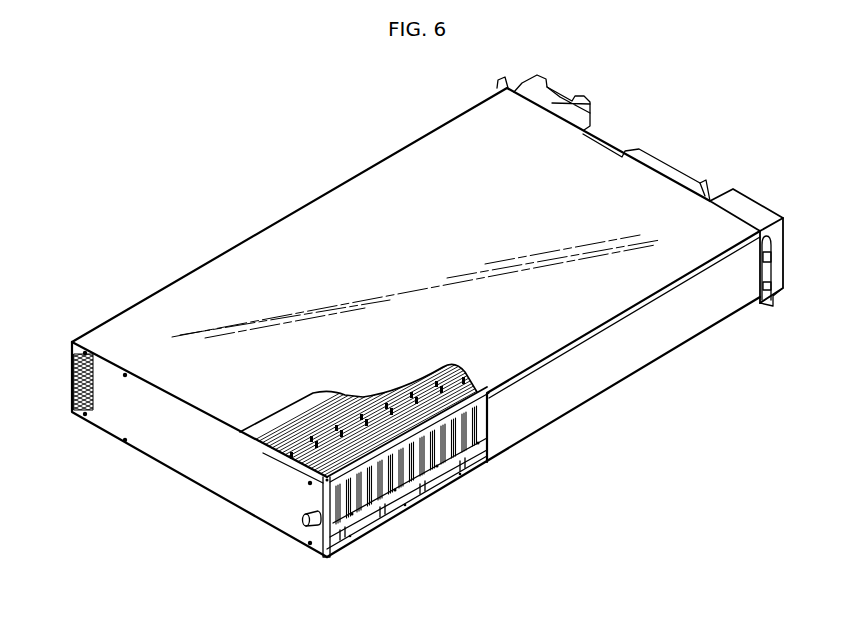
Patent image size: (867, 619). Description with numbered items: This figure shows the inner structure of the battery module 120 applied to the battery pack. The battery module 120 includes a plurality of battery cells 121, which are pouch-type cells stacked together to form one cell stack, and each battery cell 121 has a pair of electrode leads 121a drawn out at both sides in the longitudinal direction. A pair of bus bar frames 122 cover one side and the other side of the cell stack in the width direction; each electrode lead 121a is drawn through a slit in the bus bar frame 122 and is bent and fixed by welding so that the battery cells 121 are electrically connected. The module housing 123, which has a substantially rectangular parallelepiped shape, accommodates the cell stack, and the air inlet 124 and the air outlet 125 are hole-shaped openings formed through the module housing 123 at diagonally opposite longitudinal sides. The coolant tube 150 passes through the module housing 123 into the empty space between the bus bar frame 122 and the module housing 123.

The battery module 120 is at (256, 190).
The battery cell 121 is at (254, 434).
The electrode lead 121a is at (430, 440).
The bus bar frame 122 is at (458, 398).
The module housing 123 is at (157, 290).
The air inlet 124 is at (770, 212).
The air outlet 125 is at (72, 383).
The coolant tube 150 is at (305, 523).